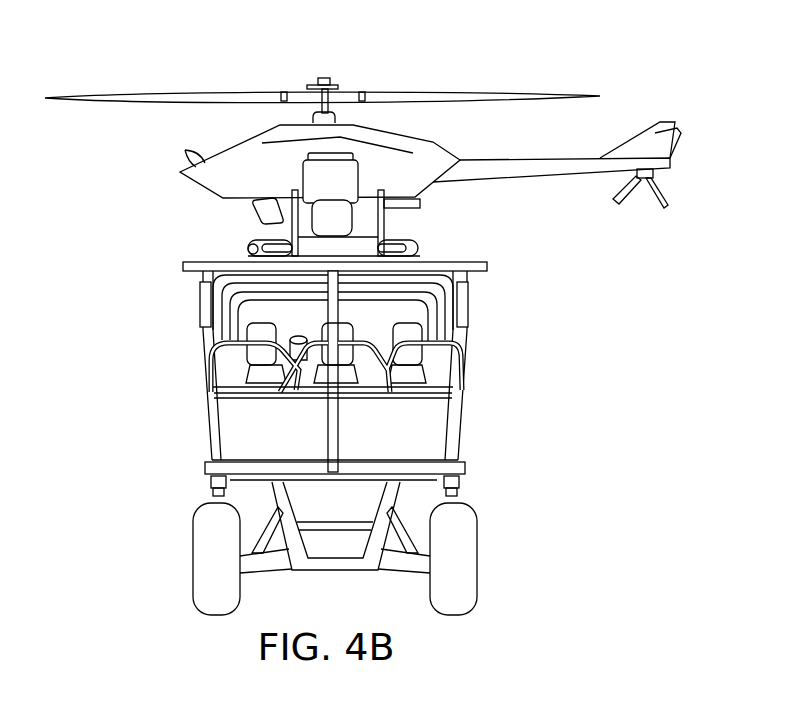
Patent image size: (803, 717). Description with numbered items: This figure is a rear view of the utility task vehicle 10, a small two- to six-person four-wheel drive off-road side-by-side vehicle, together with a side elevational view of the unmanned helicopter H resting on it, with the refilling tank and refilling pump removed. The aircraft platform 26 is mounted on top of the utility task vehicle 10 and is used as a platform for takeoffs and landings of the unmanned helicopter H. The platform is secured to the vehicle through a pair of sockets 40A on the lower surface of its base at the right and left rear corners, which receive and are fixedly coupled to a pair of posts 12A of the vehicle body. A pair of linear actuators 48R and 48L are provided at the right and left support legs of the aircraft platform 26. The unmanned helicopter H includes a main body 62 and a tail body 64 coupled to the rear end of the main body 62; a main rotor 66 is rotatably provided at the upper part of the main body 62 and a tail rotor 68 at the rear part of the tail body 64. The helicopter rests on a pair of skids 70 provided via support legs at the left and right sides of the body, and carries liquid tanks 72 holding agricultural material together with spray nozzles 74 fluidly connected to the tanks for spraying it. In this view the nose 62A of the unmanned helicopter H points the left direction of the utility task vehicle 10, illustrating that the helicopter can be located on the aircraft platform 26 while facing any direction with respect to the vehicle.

The unmanned helicopter H is at (658, 70).
The main rotor 66 is at (118, 88).
The main body 62 is at (207, 192).
The nose 62A is at (186, 173).
The tail body 64 is at (523, 179).
The tail rotor 68 is at (638, 206).
The liquid tank 72 is at (337, 178).
The skid 70 is at (412, 243).
The spray nozzle 74 is at (298, 218).
The aircraft platform 26 is at (130, 251).
The utility task vehicle 10 is at (574, 357).
The linear actuator 48L is at (192, 309).
The linear actuator 48R is at (478, 309).
The socket 40A is at (212, 487).
The post 12A is at (212, 500).